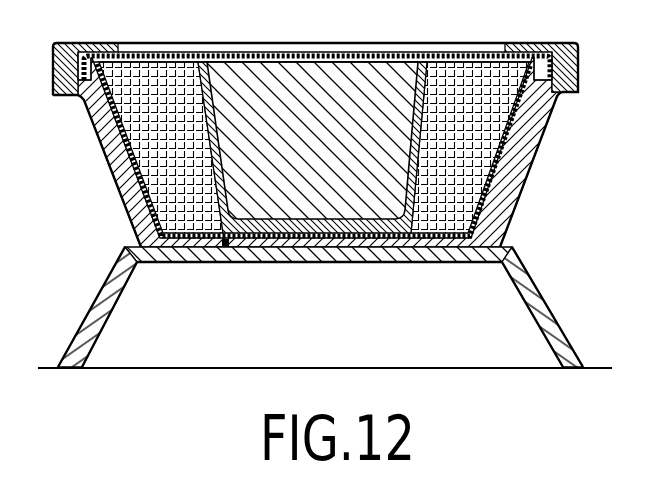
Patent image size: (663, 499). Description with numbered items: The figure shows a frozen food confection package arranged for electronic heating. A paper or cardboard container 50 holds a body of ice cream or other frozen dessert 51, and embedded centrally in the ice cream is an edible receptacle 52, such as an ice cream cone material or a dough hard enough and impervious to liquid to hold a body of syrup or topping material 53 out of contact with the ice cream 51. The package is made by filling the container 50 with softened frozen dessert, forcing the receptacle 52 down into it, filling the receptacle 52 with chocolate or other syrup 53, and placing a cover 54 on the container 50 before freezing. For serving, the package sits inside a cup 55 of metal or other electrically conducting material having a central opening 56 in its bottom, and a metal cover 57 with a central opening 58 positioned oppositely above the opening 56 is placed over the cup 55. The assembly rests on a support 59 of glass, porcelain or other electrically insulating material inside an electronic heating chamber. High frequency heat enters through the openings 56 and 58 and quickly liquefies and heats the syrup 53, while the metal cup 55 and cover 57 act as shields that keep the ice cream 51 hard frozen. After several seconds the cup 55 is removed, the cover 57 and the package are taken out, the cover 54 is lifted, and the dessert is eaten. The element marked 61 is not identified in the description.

The paper or cardboard container 50 is at (475, 203).
The body of ice cream or other frozen dessert 51 is at (163, 189).
The receptacle 52 is at (302, 228).
The syrup or topping material 53 is at (380, 208).
The cover 54 is at (398, 54).
The cup 55 is at (108, 154).
The central opening 56 is at (228, 246).
The cover 57 is at (78, 43).
The central opening 58 is at (327, 56).
The support 59 is at (556, 324).
The hood 61 is at (632, 0).